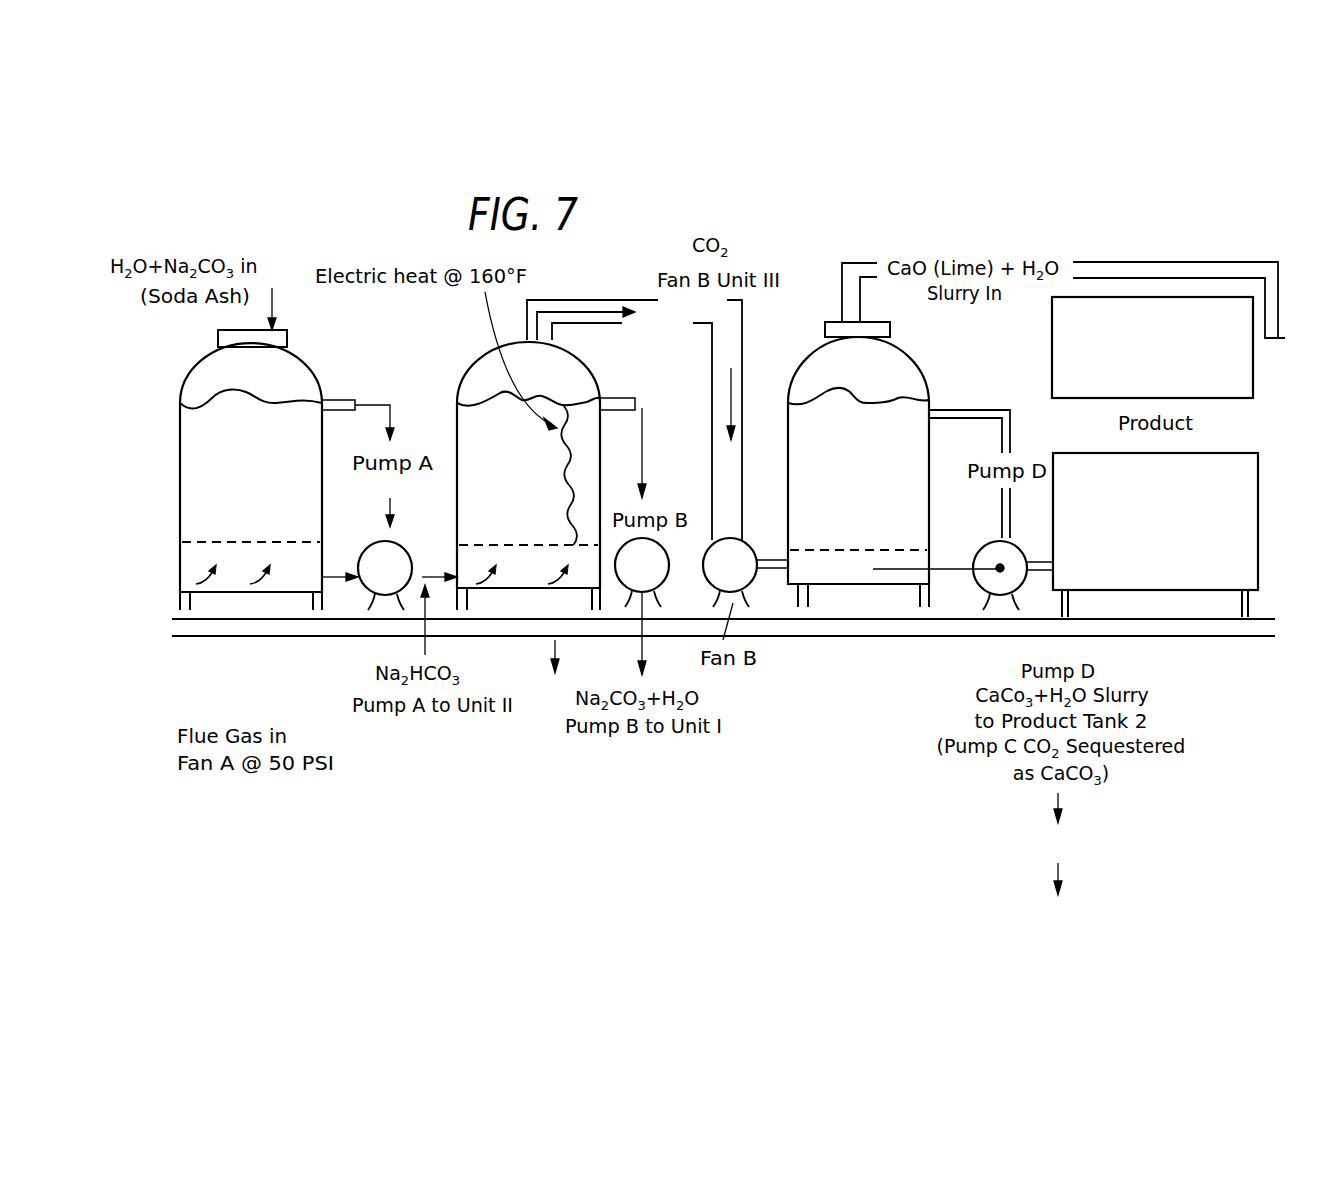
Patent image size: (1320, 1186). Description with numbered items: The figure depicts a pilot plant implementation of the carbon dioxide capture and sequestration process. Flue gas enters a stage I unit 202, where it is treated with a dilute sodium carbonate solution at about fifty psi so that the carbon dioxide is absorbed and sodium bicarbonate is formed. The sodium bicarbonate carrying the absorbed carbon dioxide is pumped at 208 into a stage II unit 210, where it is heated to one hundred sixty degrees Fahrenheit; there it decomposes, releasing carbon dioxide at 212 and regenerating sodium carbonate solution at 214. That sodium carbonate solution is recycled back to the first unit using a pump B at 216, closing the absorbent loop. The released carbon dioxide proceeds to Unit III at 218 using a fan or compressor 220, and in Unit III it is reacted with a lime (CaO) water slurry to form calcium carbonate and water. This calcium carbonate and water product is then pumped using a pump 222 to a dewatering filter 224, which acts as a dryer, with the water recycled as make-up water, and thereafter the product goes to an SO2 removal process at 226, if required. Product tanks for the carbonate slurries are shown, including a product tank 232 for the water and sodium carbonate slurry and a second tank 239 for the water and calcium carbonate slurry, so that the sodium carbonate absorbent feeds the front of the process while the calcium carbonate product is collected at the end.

The stage I unit 202 is at (290, 377).
The pump 208 is at (377, 575).
The Unit II reactor vessel 210 is at (585, 360).
The CO2 release 212 is at (580, 310).
The regenerated Na2CO3 solution 214 is at (643, 431).
The pump B 216 is at (670, 568).
The Unit III 218 is at (820, 372).
The fan or compressor 220 is at (755, 556).
The pump 222 is at (975, 545).
The dewatering filter 224 is at (1065, 822).
The SO2 removal process 226 is at (1077, 892).
The product tank 232 is at (1080, 320).
The Tank 2 water and calcium carbonate slurry 239 is at (1088, 477).